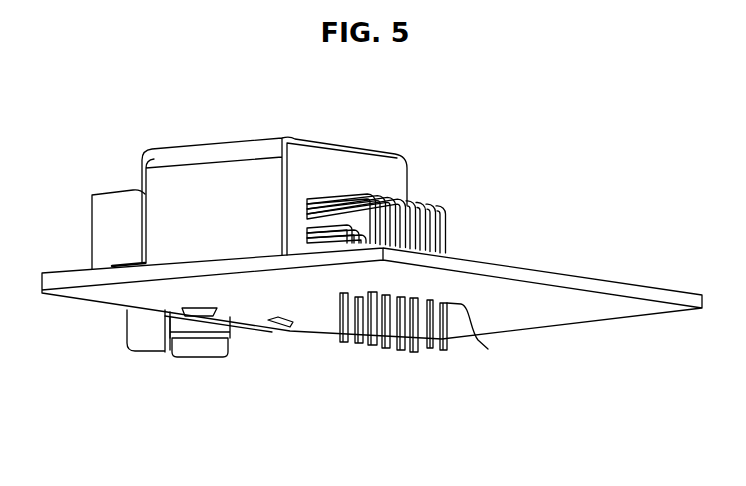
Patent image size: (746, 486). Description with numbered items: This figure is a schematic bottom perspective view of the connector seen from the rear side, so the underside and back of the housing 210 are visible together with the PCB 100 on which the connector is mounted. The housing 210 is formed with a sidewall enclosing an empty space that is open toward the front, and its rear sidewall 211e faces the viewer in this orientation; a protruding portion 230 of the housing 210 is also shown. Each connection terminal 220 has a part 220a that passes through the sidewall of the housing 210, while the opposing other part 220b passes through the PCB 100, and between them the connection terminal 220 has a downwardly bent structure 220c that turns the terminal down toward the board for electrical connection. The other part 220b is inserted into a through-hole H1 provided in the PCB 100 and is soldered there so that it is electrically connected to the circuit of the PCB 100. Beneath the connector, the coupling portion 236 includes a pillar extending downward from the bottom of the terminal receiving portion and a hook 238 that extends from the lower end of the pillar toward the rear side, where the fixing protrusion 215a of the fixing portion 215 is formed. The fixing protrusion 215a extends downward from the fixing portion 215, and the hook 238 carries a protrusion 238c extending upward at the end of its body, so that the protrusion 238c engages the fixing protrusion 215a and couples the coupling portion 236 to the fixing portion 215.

The PCB 100 is at (652, 286).
The housing 210 is at (230, 152).
The rear sidewall 211e is at (358, 168).
The fixing portion 215 is at (150, 352).
The fixing protrusion 215a is at (163, 314).
The connection terminal 220 is at (417, 178).
The part 220a is at (310, 197).
The other part 220b is at (450, 347).
The downwardly bent structure 220c is at (412, 200).
The protruding portion 230 is at (89, 189).
The coupling portion 236 is at (248, 405).
The hook 238 is at (252, 359).
The protrusion 238c is at (267, 332).
The through-hole H1 is at (481, 332).